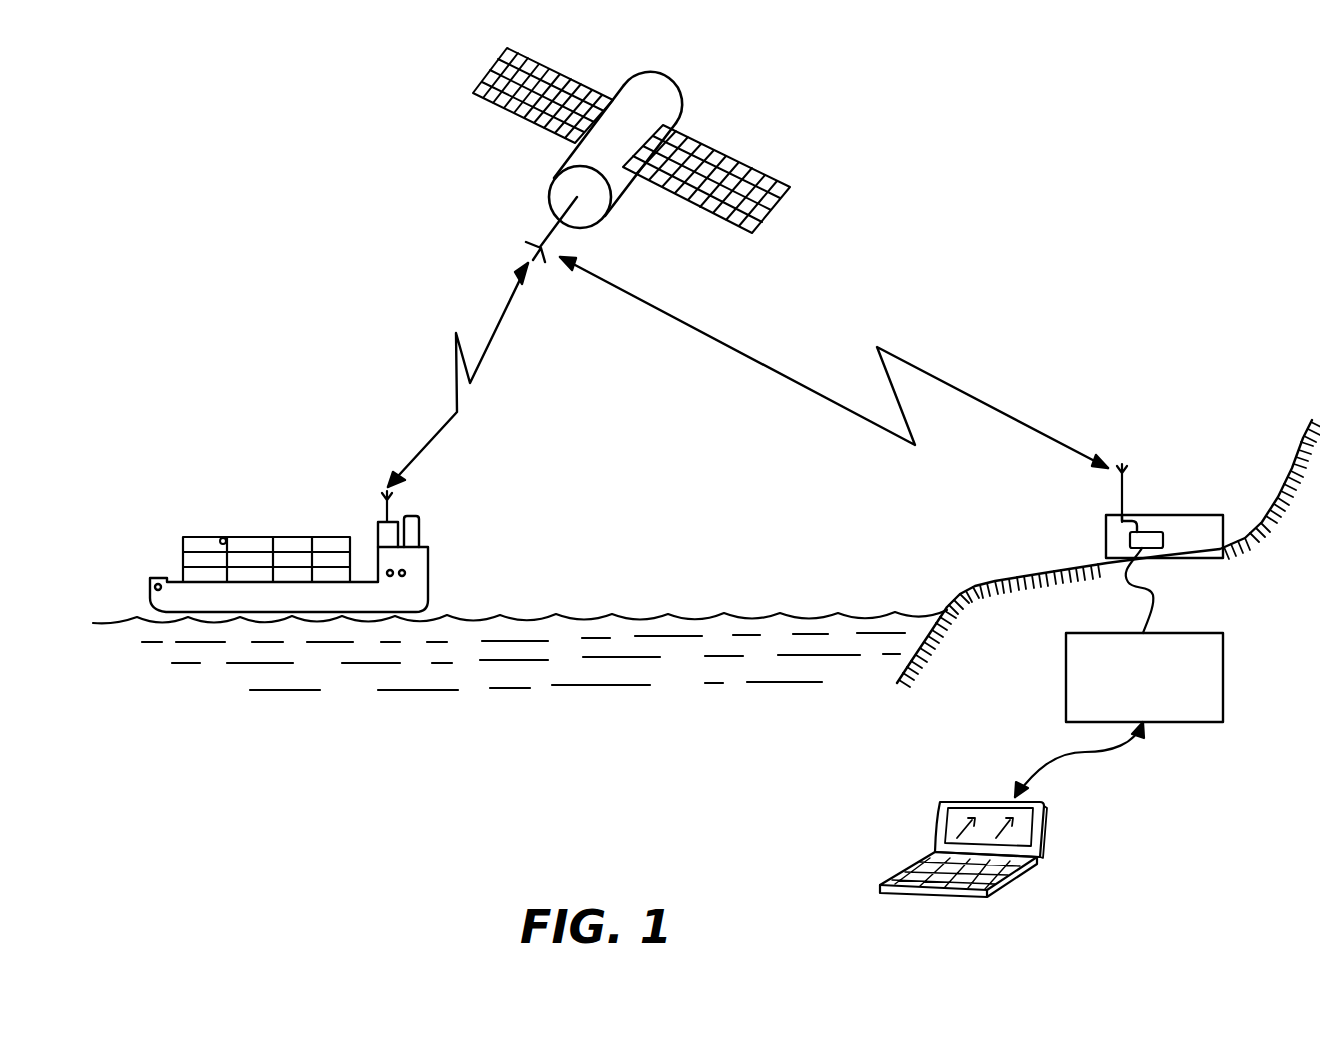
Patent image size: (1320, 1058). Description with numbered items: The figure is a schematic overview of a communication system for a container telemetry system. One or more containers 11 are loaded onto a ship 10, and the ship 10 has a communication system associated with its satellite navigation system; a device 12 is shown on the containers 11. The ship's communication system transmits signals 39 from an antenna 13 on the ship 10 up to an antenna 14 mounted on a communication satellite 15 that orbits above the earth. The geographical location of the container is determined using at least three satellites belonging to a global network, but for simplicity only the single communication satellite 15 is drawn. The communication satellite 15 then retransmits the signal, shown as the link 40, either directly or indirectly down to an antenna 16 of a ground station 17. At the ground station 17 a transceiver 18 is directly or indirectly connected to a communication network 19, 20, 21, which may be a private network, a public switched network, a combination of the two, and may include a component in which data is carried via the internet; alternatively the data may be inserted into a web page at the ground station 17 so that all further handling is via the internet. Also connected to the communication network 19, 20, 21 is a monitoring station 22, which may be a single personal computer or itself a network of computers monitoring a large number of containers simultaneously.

The ship 10 is at (432, 560).
The containers 11 is at (260, 537).
The container monitoring device 12 is at (224, 538).
The antenna 13 is at (372, 506).
The antenna 14 is at (550, 232).
The communication satellite 15 is at (694, 98).
The antenna 16 is at (1128, 490).
The ground station 17 is at (1200, 515).
The transceiver 18 is at (1163, 540).
The communication network 19 is at (1152, 612).
The communication network 20 is at (1223, 677).
The communication network 21 is at (1100, 750).
The monitoring station 22 is at (1046, 825).
The signals 39 is at (470, 383).
The satellite-to-ground communication link 40 is at (742, 358).